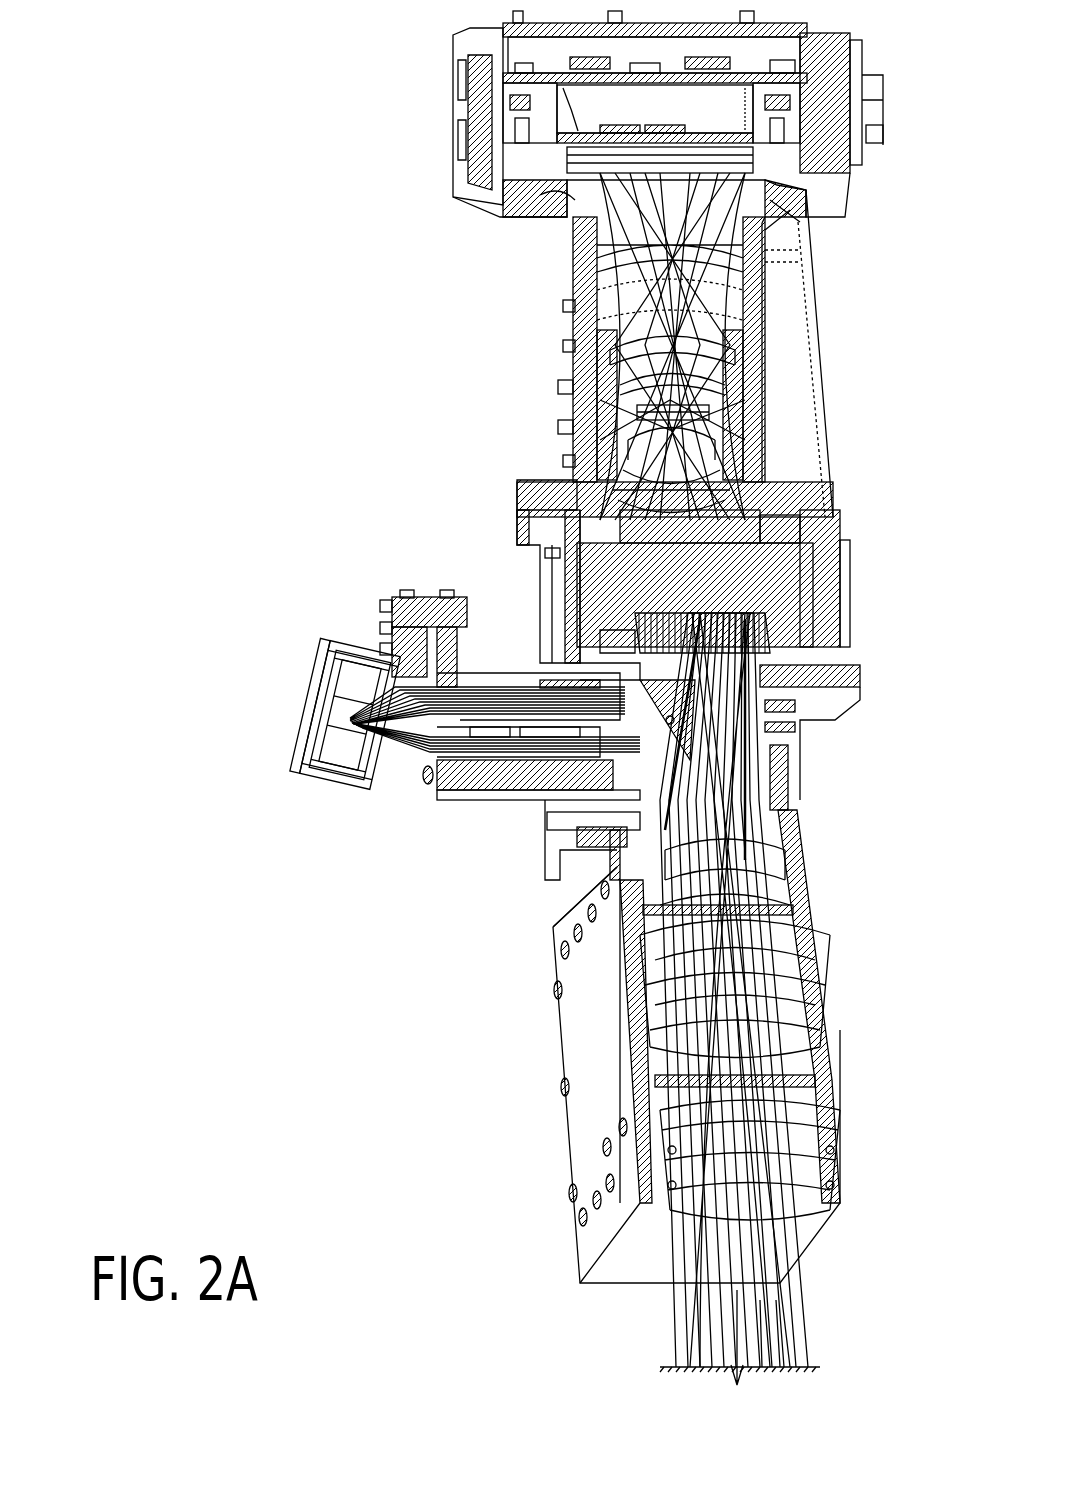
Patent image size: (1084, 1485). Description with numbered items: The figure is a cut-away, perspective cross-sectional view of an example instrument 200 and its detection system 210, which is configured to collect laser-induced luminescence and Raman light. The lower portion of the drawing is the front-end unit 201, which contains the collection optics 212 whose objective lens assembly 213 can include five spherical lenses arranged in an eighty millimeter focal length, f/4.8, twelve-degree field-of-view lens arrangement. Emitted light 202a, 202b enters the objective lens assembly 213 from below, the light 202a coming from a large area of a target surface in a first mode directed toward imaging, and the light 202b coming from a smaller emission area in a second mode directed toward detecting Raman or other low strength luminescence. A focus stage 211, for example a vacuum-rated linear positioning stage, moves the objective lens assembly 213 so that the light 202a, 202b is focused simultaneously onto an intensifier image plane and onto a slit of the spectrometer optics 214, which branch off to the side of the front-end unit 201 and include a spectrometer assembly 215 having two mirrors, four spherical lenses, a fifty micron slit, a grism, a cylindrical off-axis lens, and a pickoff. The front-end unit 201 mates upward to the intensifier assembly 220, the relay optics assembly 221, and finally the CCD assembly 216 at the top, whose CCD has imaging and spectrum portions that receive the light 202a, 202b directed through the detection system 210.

The instrument 200 is at (340, 150).
The detection system 210 is at (636, 410).
The CCD assembly 216 is at (453, 112).
The relay optics assembly 221 is at (575, 318).
The intensifier assembly 220 is at (825, 430).
The spectrometer optics 214 is at (284, 741).
The spectrometer assembly 215 is at (423, 783).
The front-end unit 201 is at (510, 1070).
The objective lens assembly 213 is at (557, 990).
The collection optics 212 is at (520, 1212).
The focus stage 211 is at (818, 1040).
The emitted light 202a is at (672, 1305).
The emitted light 202b is at (770, 1333).